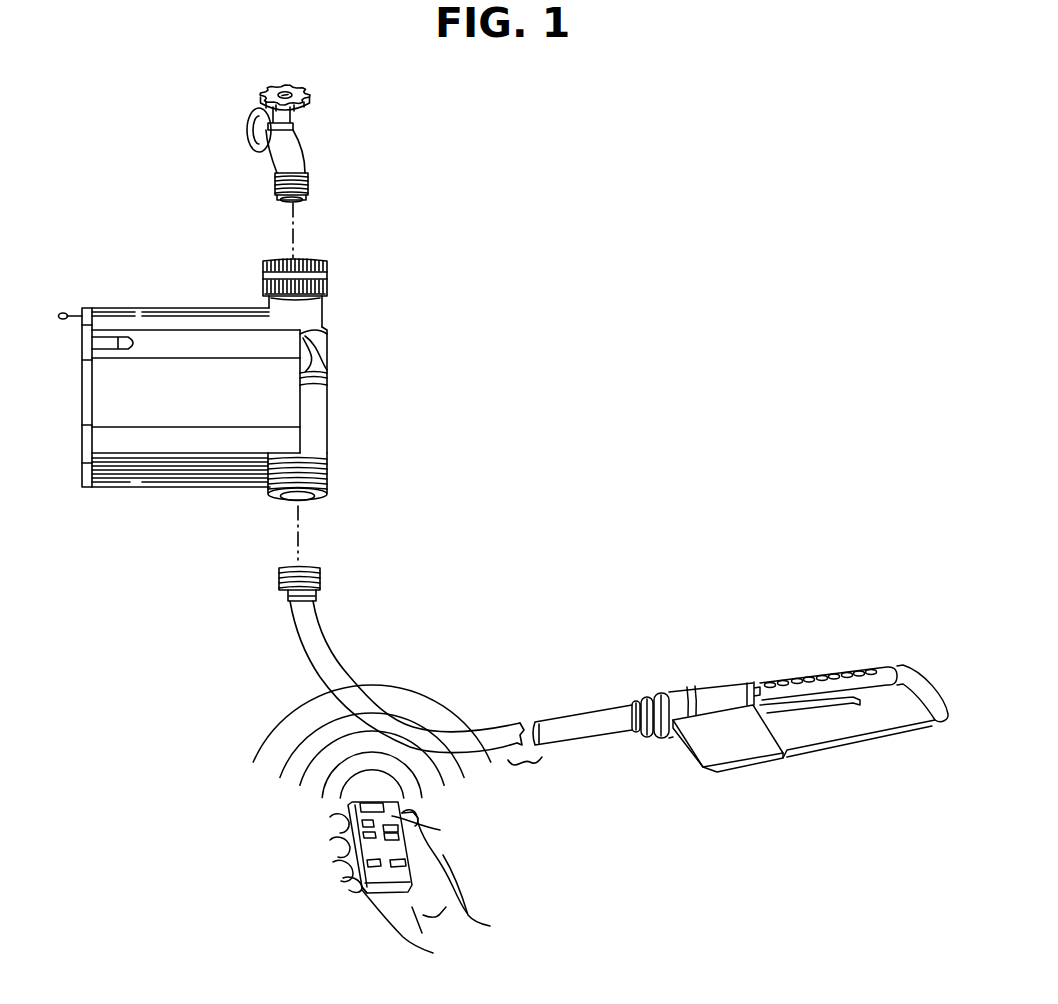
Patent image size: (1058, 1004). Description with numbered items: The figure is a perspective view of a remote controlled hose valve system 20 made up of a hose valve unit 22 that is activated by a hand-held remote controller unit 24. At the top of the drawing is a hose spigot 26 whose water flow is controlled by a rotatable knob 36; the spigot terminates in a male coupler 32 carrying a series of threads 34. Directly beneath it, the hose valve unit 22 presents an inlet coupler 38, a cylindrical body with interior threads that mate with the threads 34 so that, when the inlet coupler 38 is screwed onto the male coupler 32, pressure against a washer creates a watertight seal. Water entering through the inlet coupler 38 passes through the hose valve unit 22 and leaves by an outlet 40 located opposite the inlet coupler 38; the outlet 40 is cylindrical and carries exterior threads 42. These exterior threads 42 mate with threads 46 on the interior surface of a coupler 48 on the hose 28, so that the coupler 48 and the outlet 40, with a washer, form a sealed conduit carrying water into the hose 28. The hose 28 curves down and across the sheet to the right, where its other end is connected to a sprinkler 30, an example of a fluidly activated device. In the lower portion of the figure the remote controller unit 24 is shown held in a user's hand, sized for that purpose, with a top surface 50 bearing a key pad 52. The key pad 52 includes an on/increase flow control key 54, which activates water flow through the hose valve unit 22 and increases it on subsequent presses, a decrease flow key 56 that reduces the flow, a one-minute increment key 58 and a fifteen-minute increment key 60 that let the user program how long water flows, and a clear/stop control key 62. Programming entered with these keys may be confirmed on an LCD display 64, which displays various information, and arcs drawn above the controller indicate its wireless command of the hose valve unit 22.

The remote controlled hose valve system 20 is at (548, 302).
The hose valve unit 22 is at (225, 403).
The remote controller unit 24 is at (387, 820).
The hose spigot 26 is at (285, 161).
The hose 28 is at (423, 663).
The sprinkler 30 is at (714, 690).
The male coupler 32 is at (312, 165).
The threads 34 is at (310, 191).
The rotatable knob 36 is at (304, 94).
The inlet coupler 38 is at (330, 268).
The outlet 40 is at (330, 472).
The exterior threads 42 is at (328, 496).
The threads 46 is at (278, 572).
The coupler 48 is at (325, 582).
The top surface 50 is at (373, 868).
The key pad 52 is at (405, 858).
The on/increase flow control key 54 is at (364, 842).
The decrease flow key 56 is at (367, 861).
The one-minute increment key 58 is at (440, 907).
The fifteen-minute increment key 60 is at (400, 832).
The clear/stop control key 62 is at (414, 818).
The LCD display 64 is at (372, 802).